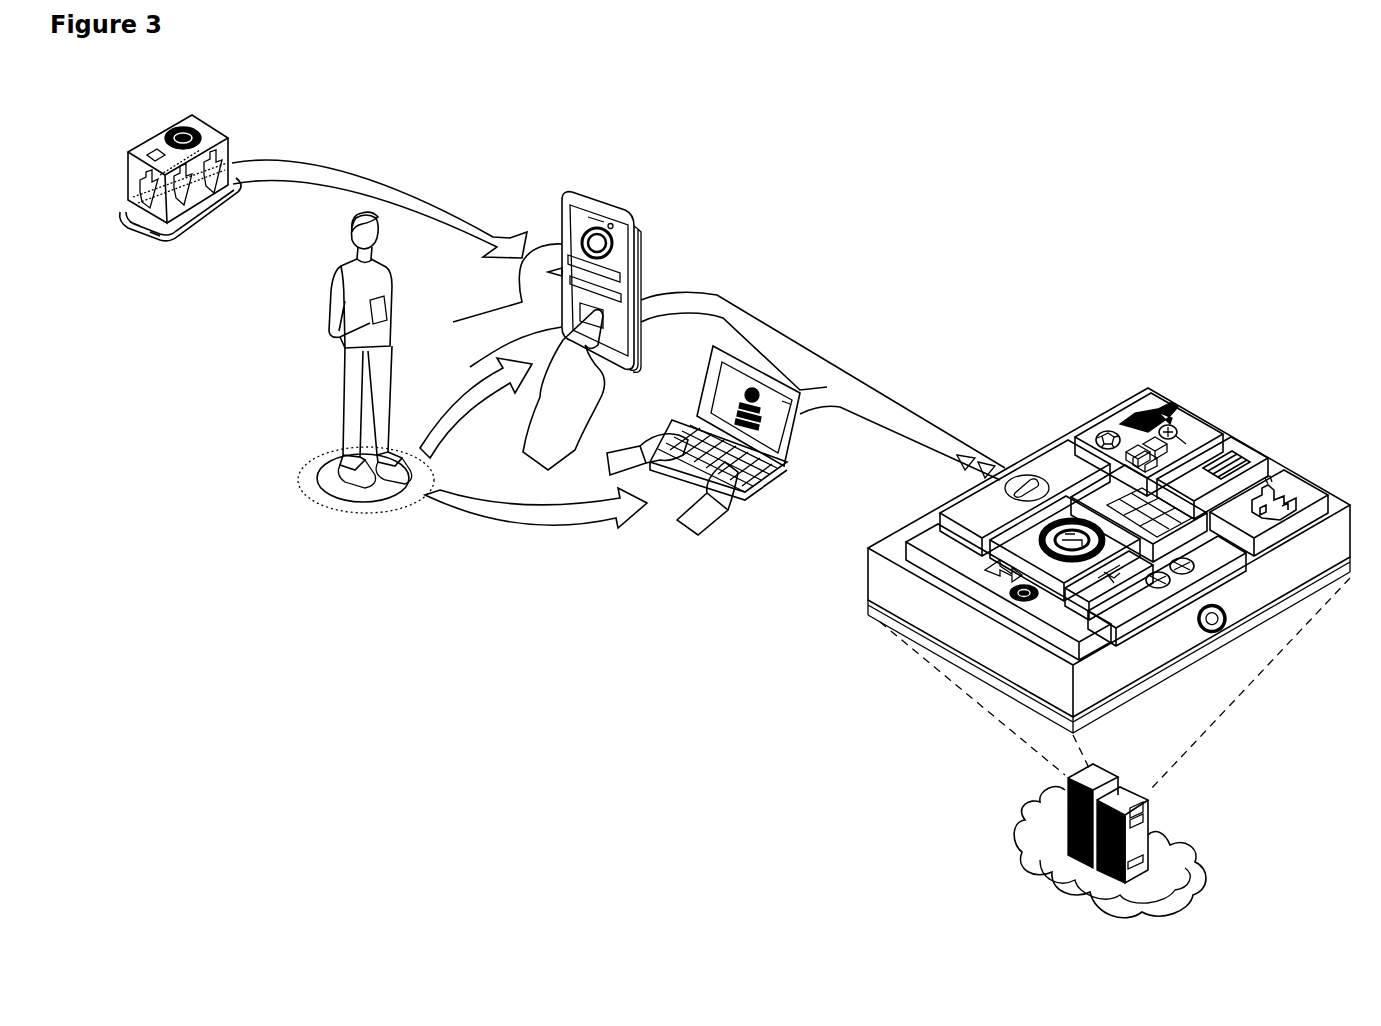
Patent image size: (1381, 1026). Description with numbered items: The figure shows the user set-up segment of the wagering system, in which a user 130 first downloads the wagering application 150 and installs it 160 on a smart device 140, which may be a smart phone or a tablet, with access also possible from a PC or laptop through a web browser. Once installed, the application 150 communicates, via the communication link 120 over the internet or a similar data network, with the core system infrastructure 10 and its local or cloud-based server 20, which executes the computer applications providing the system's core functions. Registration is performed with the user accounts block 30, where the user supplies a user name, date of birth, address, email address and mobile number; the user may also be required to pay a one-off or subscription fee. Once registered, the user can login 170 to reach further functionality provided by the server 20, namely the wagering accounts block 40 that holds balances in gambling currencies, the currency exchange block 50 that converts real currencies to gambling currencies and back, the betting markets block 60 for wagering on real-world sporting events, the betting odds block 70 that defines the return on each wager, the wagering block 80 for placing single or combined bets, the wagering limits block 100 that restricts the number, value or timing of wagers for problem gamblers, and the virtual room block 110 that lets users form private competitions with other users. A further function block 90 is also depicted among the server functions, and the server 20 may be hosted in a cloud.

The core system infrastructure 10 is at (1095, 725).
The server 20 is at (1128, 655).
The user accounts function block 30 is at (1022, 478).
The wagering accounts function block 40 is at (1032, 538).
The currency exchange function block 50 is at (930, 542).
The betting markets function block 60 is at (1140, 403).
The betting odds function block 70 is at (1262, 452).
The wagering function block 80 is at (1165, 450).
The casino module 90 is at (1283, 486).
The wagering limits function block 100 is at (1090, 587).
The virtual room function block 110 is at (1197, 553).
The communication 120 is at (931, 433).
The user 130 is at (352, 381).
The smart device 140 is at (122, 207).
The wagering application 150 is at (145, 150).
The installing 160 is at (335, 165).
The login 170 is at (620, 290).